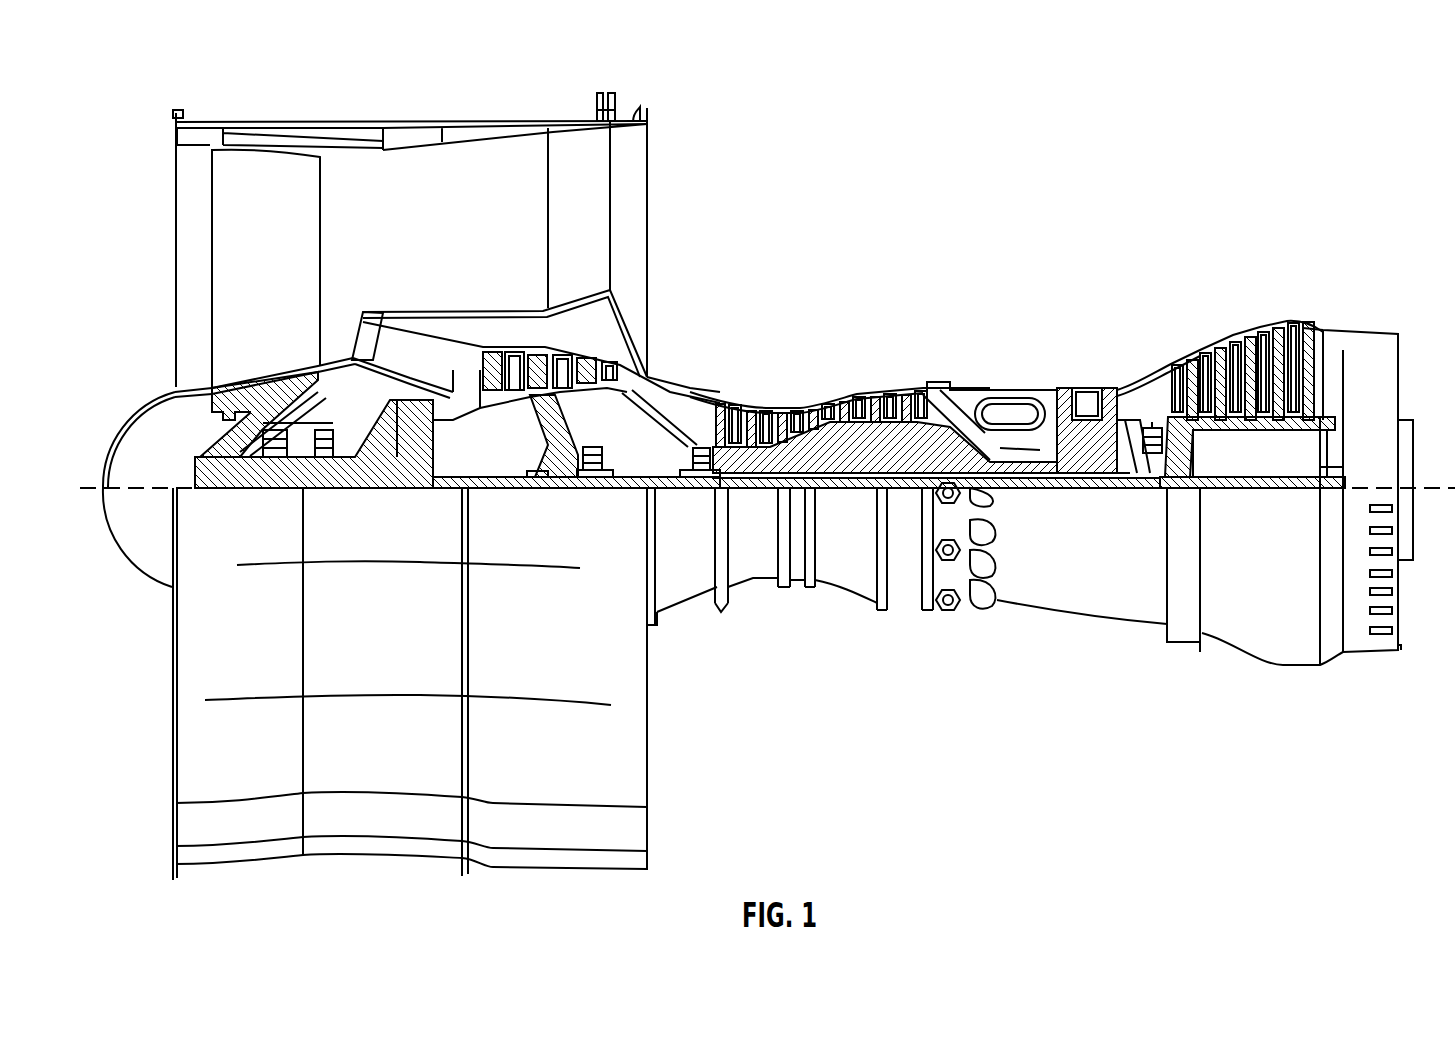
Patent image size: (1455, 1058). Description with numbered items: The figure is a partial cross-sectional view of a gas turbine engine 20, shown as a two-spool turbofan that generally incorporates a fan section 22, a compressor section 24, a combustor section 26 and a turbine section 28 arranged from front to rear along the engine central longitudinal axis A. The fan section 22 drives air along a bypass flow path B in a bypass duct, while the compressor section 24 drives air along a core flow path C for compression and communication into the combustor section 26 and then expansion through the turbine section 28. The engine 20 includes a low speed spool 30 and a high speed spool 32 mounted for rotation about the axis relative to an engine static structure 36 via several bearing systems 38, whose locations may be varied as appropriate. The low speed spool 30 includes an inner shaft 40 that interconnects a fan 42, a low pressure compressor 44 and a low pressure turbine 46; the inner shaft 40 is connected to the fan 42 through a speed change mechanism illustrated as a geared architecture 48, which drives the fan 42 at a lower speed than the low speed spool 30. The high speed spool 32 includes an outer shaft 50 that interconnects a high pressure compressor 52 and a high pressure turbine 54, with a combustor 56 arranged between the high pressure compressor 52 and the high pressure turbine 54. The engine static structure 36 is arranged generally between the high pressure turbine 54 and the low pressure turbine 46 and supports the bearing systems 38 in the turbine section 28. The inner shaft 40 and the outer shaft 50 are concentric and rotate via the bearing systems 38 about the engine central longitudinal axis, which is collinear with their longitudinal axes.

The gas turbine engine 20 is at (1222, 158).
The fan section 22 is at (302, 102).
The compressor section 24 is at (838, 352).
The combustor section 26 is at (1003, 352).
The turbine section 28 is at (1152, 328).
The low speed spool 30 is at (868, 494).
The high speed spool 32 is at (922, 438).
The engine static structure 36 is at (908, 608).
The bearing systems 38 is at (275, 457).
The inner shaft 40 is at (661, 482).
The fan 42 is at (290, 243).
The low pressure compressor 44 is at (563, 363).
The low pressure turbine 46 is at (1252, 350).
The geared architecture 48 is at (412, 458).
The outer shaft 50 is at (1037, 478).
The high pressure compressor 52 is at (825, 407).
The high pressure turbine 54 is at (1088, 386).
The combustor 56 is at (1010, 410).